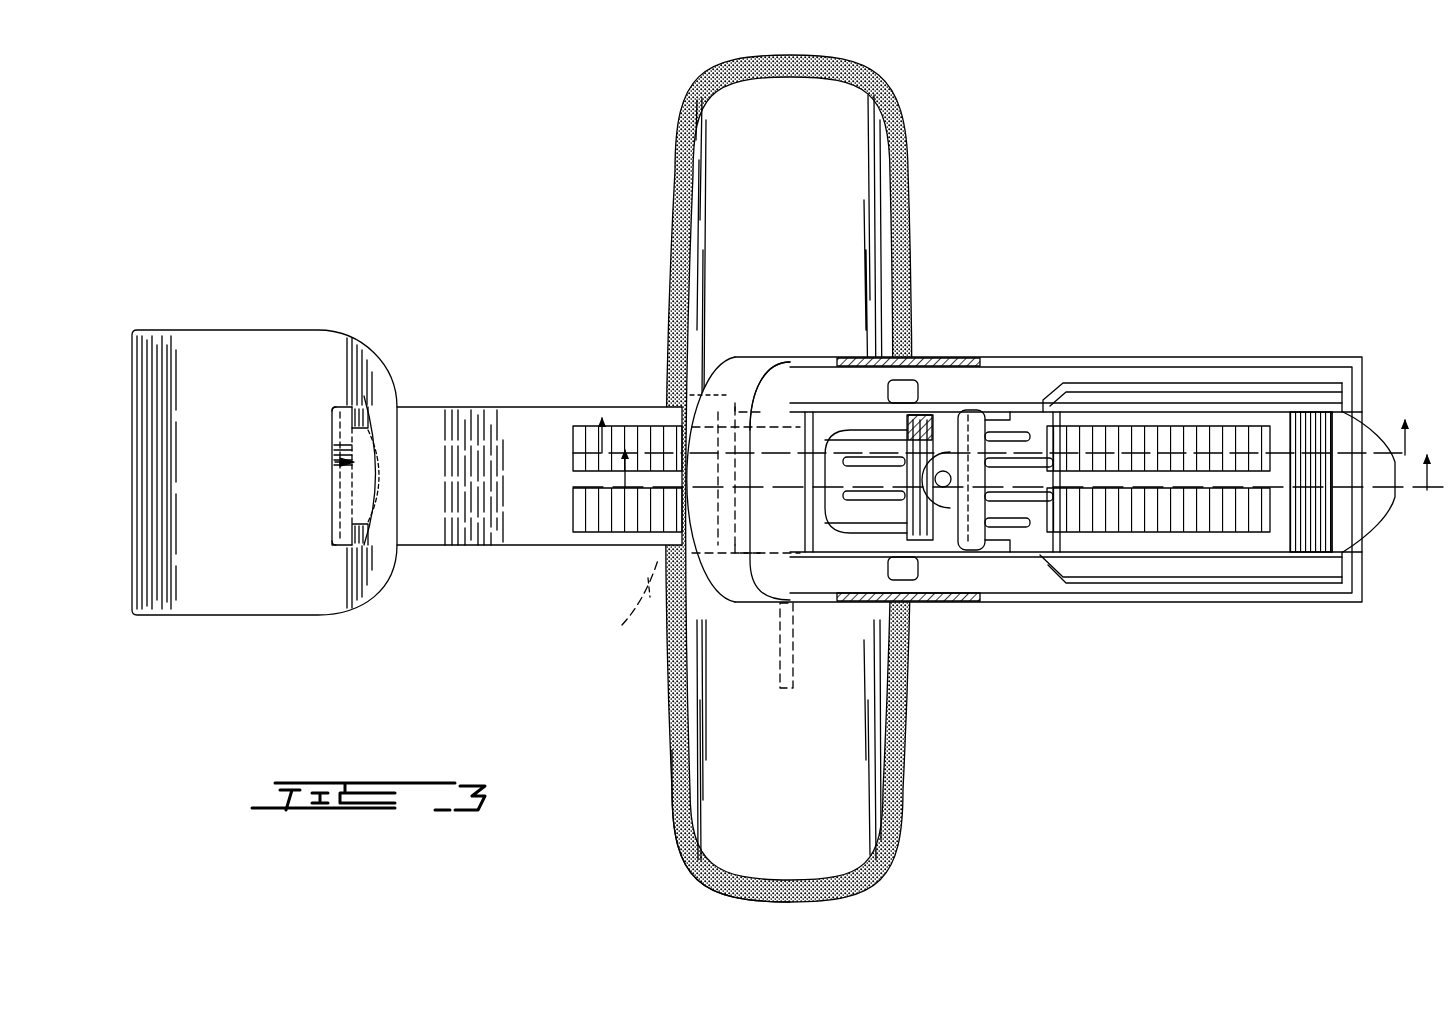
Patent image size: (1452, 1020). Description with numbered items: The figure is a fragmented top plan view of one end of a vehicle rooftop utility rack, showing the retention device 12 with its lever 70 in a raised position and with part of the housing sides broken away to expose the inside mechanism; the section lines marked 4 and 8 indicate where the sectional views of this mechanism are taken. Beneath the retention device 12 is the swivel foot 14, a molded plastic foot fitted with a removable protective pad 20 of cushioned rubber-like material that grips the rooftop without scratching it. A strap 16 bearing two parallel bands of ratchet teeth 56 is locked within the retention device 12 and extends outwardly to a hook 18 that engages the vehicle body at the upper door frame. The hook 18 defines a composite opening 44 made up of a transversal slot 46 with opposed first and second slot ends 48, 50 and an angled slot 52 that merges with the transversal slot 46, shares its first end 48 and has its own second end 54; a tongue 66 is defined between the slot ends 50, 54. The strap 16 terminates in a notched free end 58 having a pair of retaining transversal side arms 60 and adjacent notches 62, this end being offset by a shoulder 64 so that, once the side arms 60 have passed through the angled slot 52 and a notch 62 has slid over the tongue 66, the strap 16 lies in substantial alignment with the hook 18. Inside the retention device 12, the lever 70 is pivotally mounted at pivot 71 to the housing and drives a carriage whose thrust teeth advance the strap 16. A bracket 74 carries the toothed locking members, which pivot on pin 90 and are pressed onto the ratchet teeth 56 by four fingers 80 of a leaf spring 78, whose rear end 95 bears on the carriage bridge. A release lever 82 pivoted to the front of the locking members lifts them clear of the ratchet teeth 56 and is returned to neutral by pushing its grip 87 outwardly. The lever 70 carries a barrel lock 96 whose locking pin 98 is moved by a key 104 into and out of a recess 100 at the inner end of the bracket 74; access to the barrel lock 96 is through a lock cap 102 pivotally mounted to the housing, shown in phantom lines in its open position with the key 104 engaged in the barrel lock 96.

The section line 4- 4 is at (602, 453).
The section line 8- 8 is at (625, 487).
The utility rack retention device 12 is at (1028, 617).
The swivel foot 14 is at (916, 783).
The strap 16 is at (517, 405).
The hook 18 is at (228, 325).
The protective pad 20 is at (885, 880).
The composite opening 44 is at (340, 462).
The transversal slot 46 is at (374, 505).
The first slot end 48 is at (366, 414).
The second slot end 50 is at (364, 526).
The angled slot 52 is at (336, 477).
The second end of angled slot 54 is at (330, 538).
The ratchet teeth 56 is at (640, 500).
The notched free end 58 is at (334, 430).
The retaining transversal side arms 60 is at (333, 405).
The notches 62 is at (348, 395).
The shoulder 64 is at (376, 467).
The tongue 66 is at (333, 512).
The lever 70 is at (708, 440).
The pivot pin 71 is at (686, 360).
The bracket 74 is at (972, 410).
The leaf spring 78 is at (838, 603).
The fingers 80 is at (1000, 458).
The release lever 82 is at (975, 562).
The grip 87 is at (960, 450).
The pin 90 is at (918, 386).
The rear end of leaf spring 95 is at (868, 440).
The barrel lock 96 is at (808, 425).
The locking pin 98 is at (775, 410).
The recess 100 is at (1073, 393).
The lock cap 102 is at (629, 602).
The key 104 is at (778, 620).